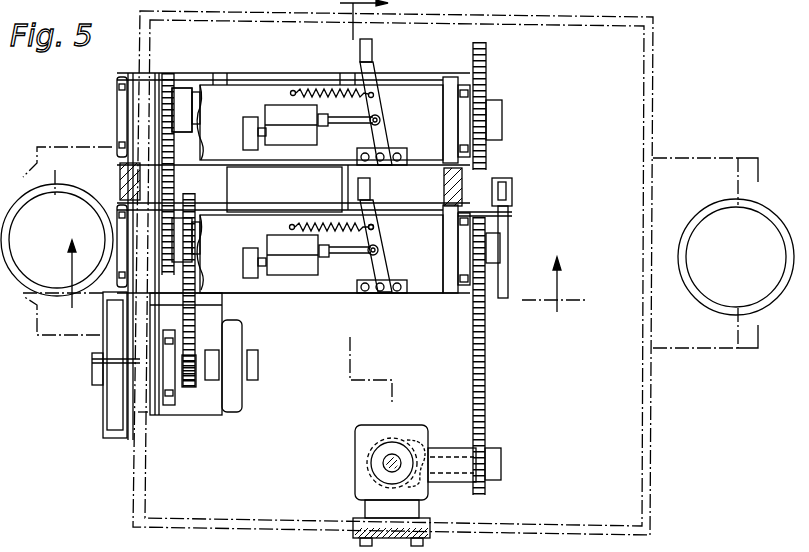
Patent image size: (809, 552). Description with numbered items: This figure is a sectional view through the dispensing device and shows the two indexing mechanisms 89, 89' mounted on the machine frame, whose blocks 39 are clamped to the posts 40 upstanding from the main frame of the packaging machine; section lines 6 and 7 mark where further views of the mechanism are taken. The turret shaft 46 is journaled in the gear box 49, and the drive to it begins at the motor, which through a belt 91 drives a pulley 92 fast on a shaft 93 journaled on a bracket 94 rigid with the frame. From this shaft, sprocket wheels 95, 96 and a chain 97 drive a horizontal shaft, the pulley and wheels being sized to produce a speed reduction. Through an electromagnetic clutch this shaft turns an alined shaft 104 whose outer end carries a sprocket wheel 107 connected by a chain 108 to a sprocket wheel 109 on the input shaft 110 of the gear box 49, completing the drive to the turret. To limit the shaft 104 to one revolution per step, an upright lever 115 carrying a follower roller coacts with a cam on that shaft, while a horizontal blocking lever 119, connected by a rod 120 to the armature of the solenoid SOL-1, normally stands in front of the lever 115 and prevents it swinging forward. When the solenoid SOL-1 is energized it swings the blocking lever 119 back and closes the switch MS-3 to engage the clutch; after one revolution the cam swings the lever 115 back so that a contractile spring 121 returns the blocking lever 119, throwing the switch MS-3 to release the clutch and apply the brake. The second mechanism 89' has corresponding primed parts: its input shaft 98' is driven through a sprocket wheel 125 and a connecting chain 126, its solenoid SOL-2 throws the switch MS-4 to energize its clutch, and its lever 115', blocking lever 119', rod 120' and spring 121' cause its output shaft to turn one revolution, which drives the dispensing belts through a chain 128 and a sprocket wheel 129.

The section line 6— 6 is at (353, 20).
The section line 7— 7 is at (314, 276).
The blocks 39 is at (76, 155).
The posts 40 is at (88, 197).
The second shaft 46 is at (383, 463).
The gear box 49 is at (408, 428).
The indexing mechanism 89 is at (290, 346).
The indexing mechanism 89' is at (252, 53).
The belt 91 is at (115, 414).
The pulley 92 is at (95, 375).
The shaft 93 is at (92, 363).
The bracket 94 is at (145, 412).
The sprocket wheel 95 is at (198, 388).
The sprocket wheel 96 is at (190, 195).
The chain 97 is at (190, 303).
The input shaft 98' is at (207, 122).
The alined shaft 104 is at (505, 241).
The sprocket wheel 107 is at (500, 262).
The chain 108 is at (487, 383).
The sprocket wheel 109 is at (501, 469).
The input shaft 110 is at (450, 455).
The upright lever 115 is at (390, 188).
The upright lever 115' is at (394, 50).
The blocking lever 119 is at (393, 246).
The blocking lever 119' is at (394, 113).
The rod 120 is at (378, 260).
The rod 120' is at (350, 133).
The contractile spring 121 is at (332, 206).
The contractile spring 121' is at (329, 71).
The sprocket wheel 125 is at (183, 88).
The connecting chain 126 is at (167, 73).
The chain 128 is at (488, 66).
The sprocket wheel 129 is at (502, 125).
The switch MS-3 is at (248, 248).
The switch MS-4 is at (243, 140).
The solenoid SOL-1 is at (303, 282).
The solenoid SOL-2 is at (280, 108).